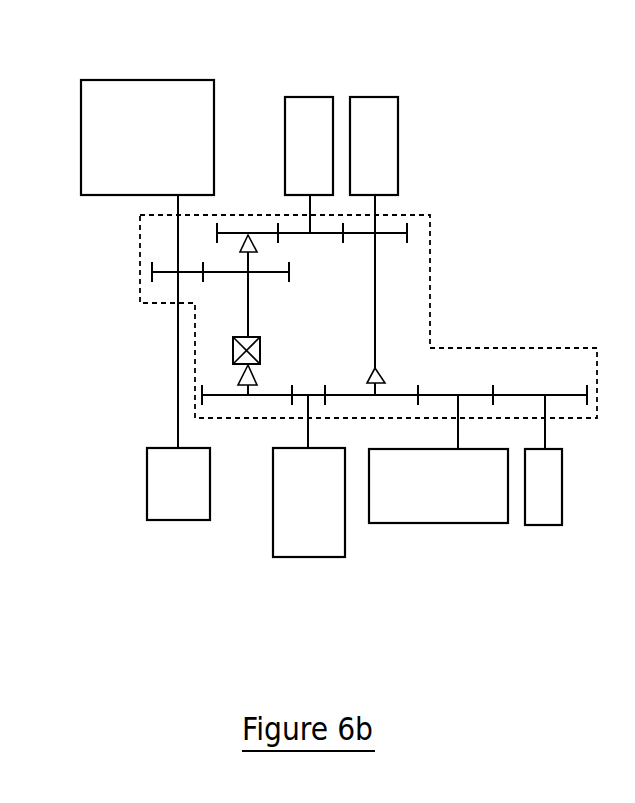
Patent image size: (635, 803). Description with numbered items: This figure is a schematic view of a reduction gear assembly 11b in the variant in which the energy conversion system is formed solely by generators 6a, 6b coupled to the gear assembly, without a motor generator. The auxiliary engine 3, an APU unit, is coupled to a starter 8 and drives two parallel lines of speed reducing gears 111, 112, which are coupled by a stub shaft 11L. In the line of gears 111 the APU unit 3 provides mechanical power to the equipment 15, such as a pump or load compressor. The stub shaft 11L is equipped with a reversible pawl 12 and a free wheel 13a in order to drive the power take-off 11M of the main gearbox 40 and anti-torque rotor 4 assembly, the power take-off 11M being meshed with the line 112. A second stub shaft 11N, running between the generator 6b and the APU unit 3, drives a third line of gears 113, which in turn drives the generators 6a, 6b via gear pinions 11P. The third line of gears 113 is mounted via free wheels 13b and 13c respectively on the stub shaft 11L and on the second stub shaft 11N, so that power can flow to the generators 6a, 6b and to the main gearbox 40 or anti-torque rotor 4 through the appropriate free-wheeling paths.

The main gearbox 40 is at (153, 80).
The generator 6a is at (300, 97).
The generator 6b is at (370, 97).
The reduction gear assembly 11b is at (477, 212).
The gear pinions 11P is at (326, 238).
The third line of gears 113 is at (206, 232).
The line of speed reducing gears 112 is at (150, 272).
The line of speed reducing gears 111 is at (198, 395).
The power take-off 11M is at (177, 328).
The free wheel 13b is at (239, 240).
The stub shaft 11L is at (249, 308).
The reversible pawl 12 is at (260, 344).
The free wheel 13a is at (262, 375).
The second stub shaft 11N is at (376, 282).
The free wheel 13c is at (379, 372).
The anti-torque rotor 4 is at (182, 520).
The auxiliary engine 3 is at (330, 557).
The equipment 15 is at (450, 523).
The starter 8 is at (535, 525).